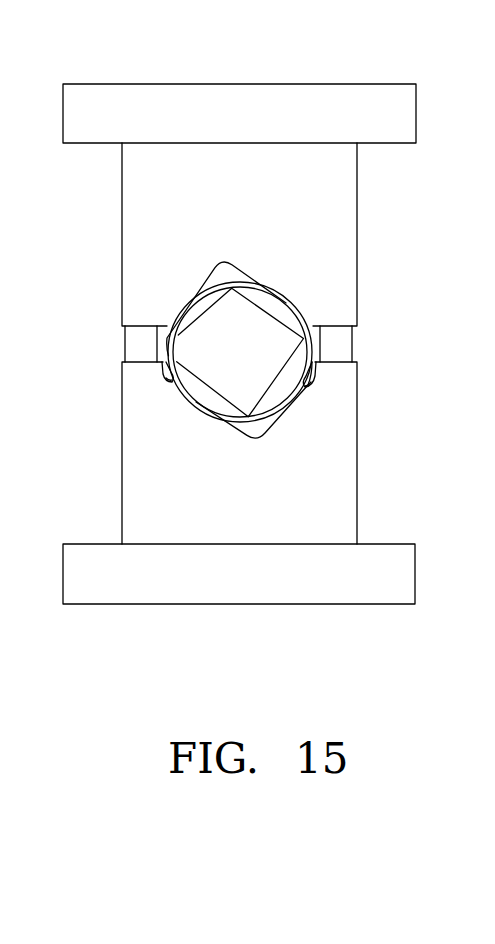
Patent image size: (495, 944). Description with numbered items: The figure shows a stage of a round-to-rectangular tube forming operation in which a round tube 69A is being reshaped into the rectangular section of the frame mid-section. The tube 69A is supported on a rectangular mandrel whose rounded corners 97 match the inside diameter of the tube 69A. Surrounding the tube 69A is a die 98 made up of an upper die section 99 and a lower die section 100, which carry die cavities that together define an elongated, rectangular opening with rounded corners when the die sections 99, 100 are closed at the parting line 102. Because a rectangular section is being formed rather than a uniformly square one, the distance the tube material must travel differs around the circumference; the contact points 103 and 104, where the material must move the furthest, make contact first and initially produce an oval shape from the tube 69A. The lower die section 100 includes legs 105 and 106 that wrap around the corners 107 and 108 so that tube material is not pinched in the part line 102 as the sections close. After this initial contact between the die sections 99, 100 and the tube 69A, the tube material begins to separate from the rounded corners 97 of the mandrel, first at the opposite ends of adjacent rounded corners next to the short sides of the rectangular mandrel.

The die 98 is at (371, 336).
The upper die section 99 is at (358, 188).
The lower die section 100 is at (358, 458).
The parting line 102 is at (323, 352).
The rounded corners 97 is at (212, 292).
The round tube 69A is at (296, 314).
The contact point 103 is at (285, 302).
The contact point 104 is at (198, 403).
The leg 105 is at (318, 366).
The leg 106 is at (161, 366).
The corner 107 is at (308, 384).
The corner 108 is at (167, 380).